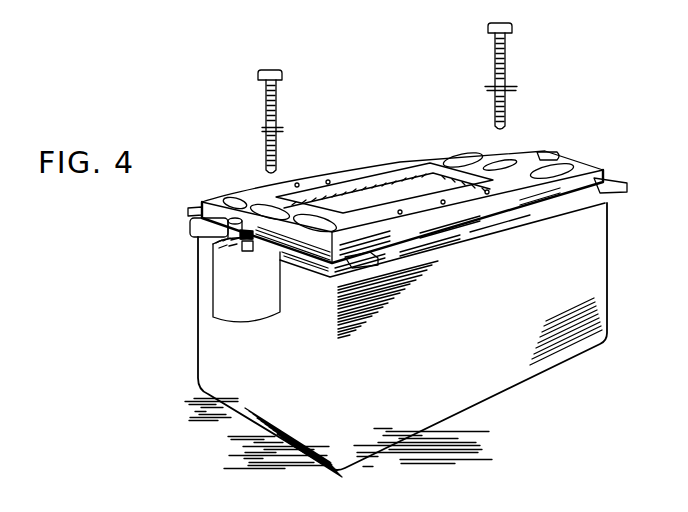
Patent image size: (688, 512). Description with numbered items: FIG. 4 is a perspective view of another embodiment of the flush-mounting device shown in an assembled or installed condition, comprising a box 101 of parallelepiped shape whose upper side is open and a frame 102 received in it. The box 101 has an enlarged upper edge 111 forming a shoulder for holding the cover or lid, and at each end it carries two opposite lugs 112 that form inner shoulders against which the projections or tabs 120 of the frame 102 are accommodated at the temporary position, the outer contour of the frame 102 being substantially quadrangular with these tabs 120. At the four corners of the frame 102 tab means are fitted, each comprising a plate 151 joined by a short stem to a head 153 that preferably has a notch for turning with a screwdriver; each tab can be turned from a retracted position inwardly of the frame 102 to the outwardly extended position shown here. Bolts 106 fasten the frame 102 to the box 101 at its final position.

The box 101 is at (423, 377).
The frame 102 is at (612, 145).
The bolts 106 is at (273, 107).
The enlarged upper edge 111 is at (205, 231).
The lugs 112 is at (230, 292).
The tabs 120 is at (242, 242).
The plate 151 is at (193, 208).
The head 153 is at (463, 157).